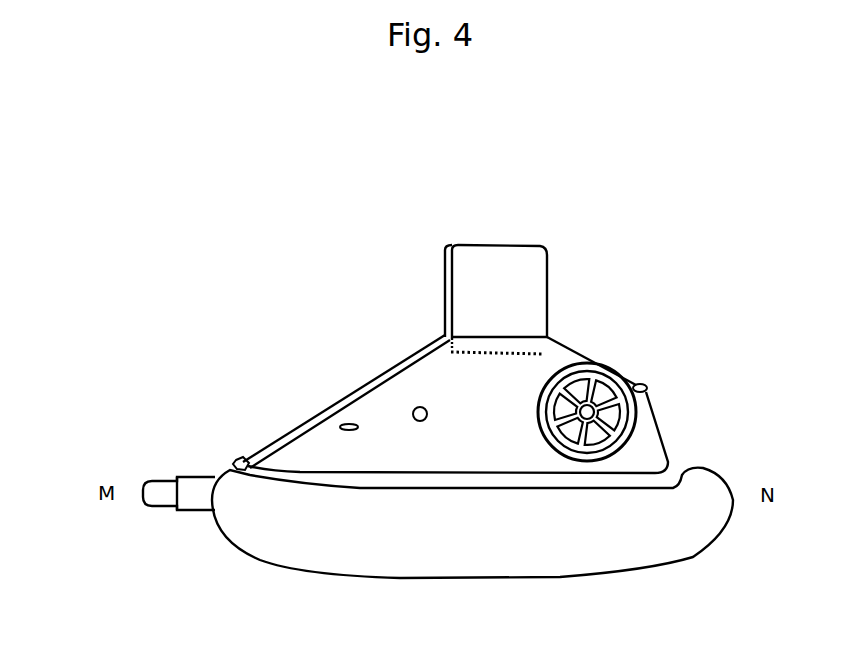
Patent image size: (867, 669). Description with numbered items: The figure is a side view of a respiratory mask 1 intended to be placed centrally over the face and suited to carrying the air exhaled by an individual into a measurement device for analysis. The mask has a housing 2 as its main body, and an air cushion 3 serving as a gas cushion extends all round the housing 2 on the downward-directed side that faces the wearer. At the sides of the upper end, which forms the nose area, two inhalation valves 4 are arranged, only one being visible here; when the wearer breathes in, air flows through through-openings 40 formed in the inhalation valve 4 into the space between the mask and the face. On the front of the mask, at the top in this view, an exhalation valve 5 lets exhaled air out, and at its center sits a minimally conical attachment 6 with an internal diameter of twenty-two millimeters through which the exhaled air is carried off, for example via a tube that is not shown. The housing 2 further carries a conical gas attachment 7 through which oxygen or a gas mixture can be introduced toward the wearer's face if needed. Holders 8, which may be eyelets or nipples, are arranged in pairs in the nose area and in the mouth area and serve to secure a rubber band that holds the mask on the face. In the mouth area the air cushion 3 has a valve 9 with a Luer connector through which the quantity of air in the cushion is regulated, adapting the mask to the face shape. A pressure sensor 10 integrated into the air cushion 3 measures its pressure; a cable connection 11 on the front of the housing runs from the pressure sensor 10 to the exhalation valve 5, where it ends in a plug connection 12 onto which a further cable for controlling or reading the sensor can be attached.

The respiratory mask 1 is at (282, 368).
The housing 2 is at (653, 445).
The air cushion 3 is at (520, 562).
The inhalation valve 4 is at (633, 380).
The through-opening 40 is at (597, 385).
The exhalation valve 5 is at (533, 347).
The attachment 6 is at (533, 295).
The conical gas attachment 7 is at (422, 426).
The holder 8 is at (346, 438).
The valve 9 is at (192, 502).
The pressure sensor 10 is at (236, 461).
The cable connection 11 is at (340, 400).
The plug connection 12 is at (440, 263).